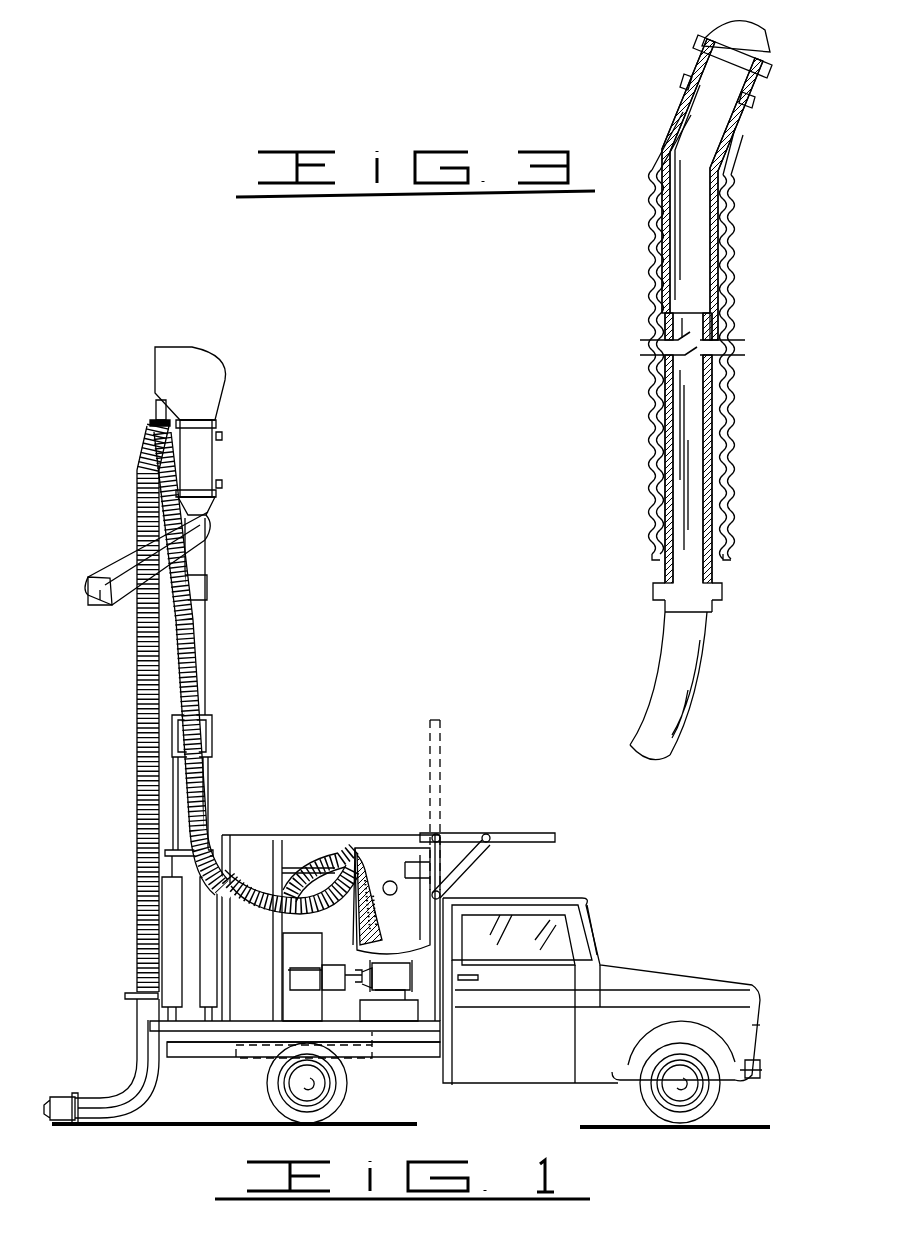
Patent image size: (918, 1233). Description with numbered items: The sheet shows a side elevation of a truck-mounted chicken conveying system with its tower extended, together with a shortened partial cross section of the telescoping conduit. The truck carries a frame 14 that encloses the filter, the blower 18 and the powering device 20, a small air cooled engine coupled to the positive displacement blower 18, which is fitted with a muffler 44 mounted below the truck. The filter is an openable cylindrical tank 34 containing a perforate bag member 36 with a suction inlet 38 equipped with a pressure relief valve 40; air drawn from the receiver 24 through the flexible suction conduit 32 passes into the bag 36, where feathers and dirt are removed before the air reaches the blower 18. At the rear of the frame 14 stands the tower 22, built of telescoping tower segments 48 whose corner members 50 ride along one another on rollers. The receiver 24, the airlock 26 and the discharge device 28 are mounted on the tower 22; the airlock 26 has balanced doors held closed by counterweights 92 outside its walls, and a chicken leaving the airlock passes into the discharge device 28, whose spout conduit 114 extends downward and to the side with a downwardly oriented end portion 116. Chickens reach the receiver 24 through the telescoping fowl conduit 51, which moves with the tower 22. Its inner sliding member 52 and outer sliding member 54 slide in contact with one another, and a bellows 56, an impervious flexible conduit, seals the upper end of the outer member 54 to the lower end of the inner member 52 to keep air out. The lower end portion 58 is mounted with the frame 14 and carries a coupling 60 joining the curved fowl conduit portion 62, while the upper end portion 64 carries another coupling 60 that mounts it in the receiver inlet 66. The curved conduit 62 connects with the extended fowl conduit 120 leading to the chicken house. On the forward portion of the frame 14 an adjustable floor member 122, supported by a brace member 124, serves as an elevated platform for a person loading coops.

In FIG. 1, the frame 14 is at (548, 833).
In FIG. 1, the blower 18 is at (368, 985).
In FIG. 1, the powering device 20 is at (285, 950).
In FIG. 1, the tower 22 is at (222, 728).
In FIG. 1, the receiver 24 is at (233, 368).
In FIG. 1, the airlock 26 is at (215, 464).
In FIG. 1, the discharge device 28 is at (213, 526).
In FIG. 1, the suction conduit 32 is at (200, 687).
In FIG. 1, the cylindrical tank 34 is at (385, 858).
In FIG. 1, the perforate bag member 36 is at (356, 900).
In FIG. 1, the suction inlet 38 is at (355, 848).
In FIG. 1, the pressure relief valve 40 is at (390, 895).
In FIG. 1, the muffler 44 is at (352, 1056).
In FIG. 1, the tower segments 48 is at (170, 665).
In FIG. 1, the corner members 50 is at (206, 562).
In FIG. 3, the telescoping fowl conduit 51 is at (626, 294).
In FIG. 1, the telescoping fowl conduit 51 is at (128, 742).
In FIG. 3, the inner sliding member 52 is at (708, 513).
In FIG. 3, the outer sliding member 54 is at (735, 268).
In FIG. 3, the bellows 56 is at (735, 476).
In FIG. 1, the bellows 56 is at (140, 793).
In FIG. 3, the lower end portion 58 is at (720, 580).
In FIG. 3, the coupling 60 is at (765, 80).
In FIG. 1, the coupling 60 is at (148, 421).
In FIG. 3, the curved fowl conduit portion 62 is at (690, 667).
In FIG. 1, the curved fowl conduit portion 62 is at (126, 1078).
In FIG. 3, the upper end portion 64 is at (748, 100).
In FIG. 1, the inlet 66 is at (146, 400).
In FIG. 1, the counterweights 92 is at (223, 436).
In FIG. 1, the spout conduit 114 is at (120, 560).
In FIG. 1, the end portion 116 is at (90, 598).
In FIG. 1, the extended fowl conduit 120 is at (52, 1126).
In FIG. 1, the adjustable floor member 122 is at (478, 810).
In FIG. 1, the brace member 124 is at (462, 866).